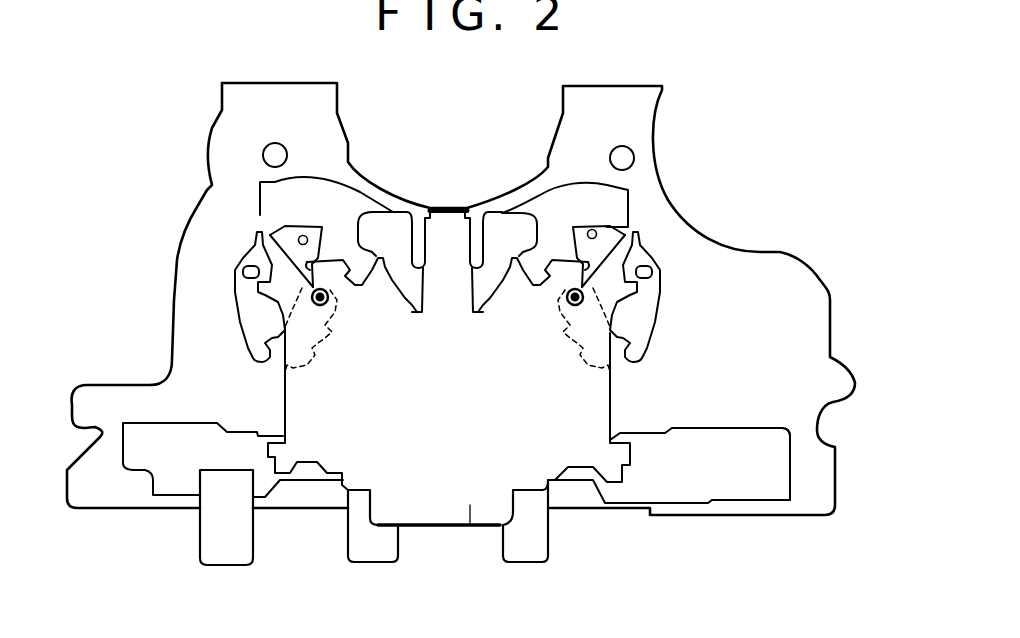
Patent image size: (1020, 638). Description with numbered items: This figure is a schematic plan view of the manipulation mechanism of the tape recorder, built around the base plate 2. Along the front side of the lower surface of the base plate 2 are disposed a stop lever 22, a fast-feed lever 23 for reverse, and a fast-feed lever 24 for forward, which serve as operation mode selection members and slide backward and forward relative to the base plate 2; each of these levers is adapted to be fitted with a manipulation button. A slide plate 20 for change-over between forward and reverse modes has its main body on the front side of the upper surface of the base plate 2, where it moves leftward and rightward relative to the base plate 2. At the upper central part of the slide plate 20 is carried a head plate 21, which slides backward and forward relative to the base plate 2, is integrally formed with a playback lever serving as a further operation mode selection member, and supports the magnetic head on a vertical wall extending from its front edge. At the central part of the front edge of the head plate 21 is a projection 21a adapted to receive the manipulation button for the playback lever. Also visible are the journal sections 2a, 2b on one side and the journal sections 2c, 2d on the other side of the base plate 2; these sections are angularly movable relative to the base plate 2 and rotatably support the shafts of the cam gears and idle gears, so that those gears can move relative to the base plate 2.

The base plate 2 is at (208, 127).
The journal section 2a is at (278, 340).
The journal section 2b is at (297, 235).
The journal section 2c is at (613, 353).
The journal section 2d is at (607, 237).
The slide plate 20 is at (737, 487).
The head plate 21 is at (425, 534).
The projection 21a is at (470, 523).
The stop lever 22 is at (207, 538).
The fast-feed lever for reverse 23 is at (350, 545).
The fast-feed lever for forward 24 is at (537, 548).